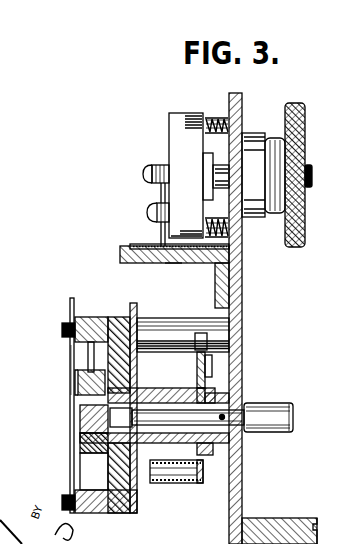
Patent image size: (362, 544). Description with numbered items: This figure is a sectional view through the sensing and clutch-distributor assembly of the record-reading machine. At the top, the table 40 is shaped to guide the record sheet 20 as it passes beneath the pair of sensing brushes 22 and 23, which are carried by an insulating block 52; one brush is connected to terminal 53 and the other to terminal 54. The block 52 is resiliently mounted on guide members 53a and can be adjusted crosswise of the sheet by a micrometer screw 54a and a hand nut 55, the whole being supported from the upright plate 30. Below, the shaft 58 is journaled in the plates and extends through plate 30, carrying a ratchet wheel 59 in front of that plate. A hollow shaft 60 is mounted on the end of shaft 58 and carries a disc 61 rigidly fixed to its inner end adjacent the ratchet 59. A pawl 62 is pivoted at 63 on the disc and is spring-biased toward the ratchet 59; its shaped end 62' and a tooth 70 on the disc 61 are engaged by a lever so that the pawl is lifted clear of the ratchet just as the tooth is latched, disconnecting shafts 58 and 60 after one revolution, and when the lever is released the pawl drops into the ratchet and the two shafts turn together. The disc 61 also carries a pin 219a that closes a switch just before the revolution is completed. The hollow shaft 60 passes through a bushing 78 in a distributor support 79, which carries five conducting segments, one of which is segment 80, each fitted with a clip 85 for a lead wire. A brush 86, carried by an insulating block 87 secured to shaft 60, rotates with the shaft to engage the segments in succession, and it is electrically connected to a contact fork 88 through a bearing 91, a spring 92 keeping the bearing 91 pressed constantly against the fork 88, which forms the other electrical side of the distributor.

The record sheet 20 is at (140, 244).
The sensing brush 22 is at (162, 239).
The sensing brush 23 is at (173, 264).
The plate 30 is at (243, 108).
The table 40 is at (120, 254).
The insulating block 52 is at (170, 147).
The terminal 53 is at (150, 213).
The guide members 53a is at (216, 118).
The terminal 54 is at (148, 172).
The micrometer screw 54a is at (309, 171).
The hand nut 55 is at (303, 238).
The shaft 58 is at (272, 405).
The ratchet wheel 59 is at (213, 451).
The hollow shaft 60 is at (153, 398).
The disc 61 is at (197, 385).
The pawl 62 is at (239, 370).
The pawl end 62' is at (201, 325).
The pivot 63 is at (213, 365).
The tooth 70 is at (197, 333).
The bushing 78 is at (141, 446).
The distributor support 79 is at (120, 512).
The conducting segment 80 is at (90, 318).
The clip 85 is at (75, 301).
The brush 86 is at (90, 357).
The insulating block 87 is at (90, 455).
The contact fork 88 is at (72, 367).
The bearing 91 is at (72, 413).
The spring 92 is at (107, 453).
The pin 219a is at (178, 485).